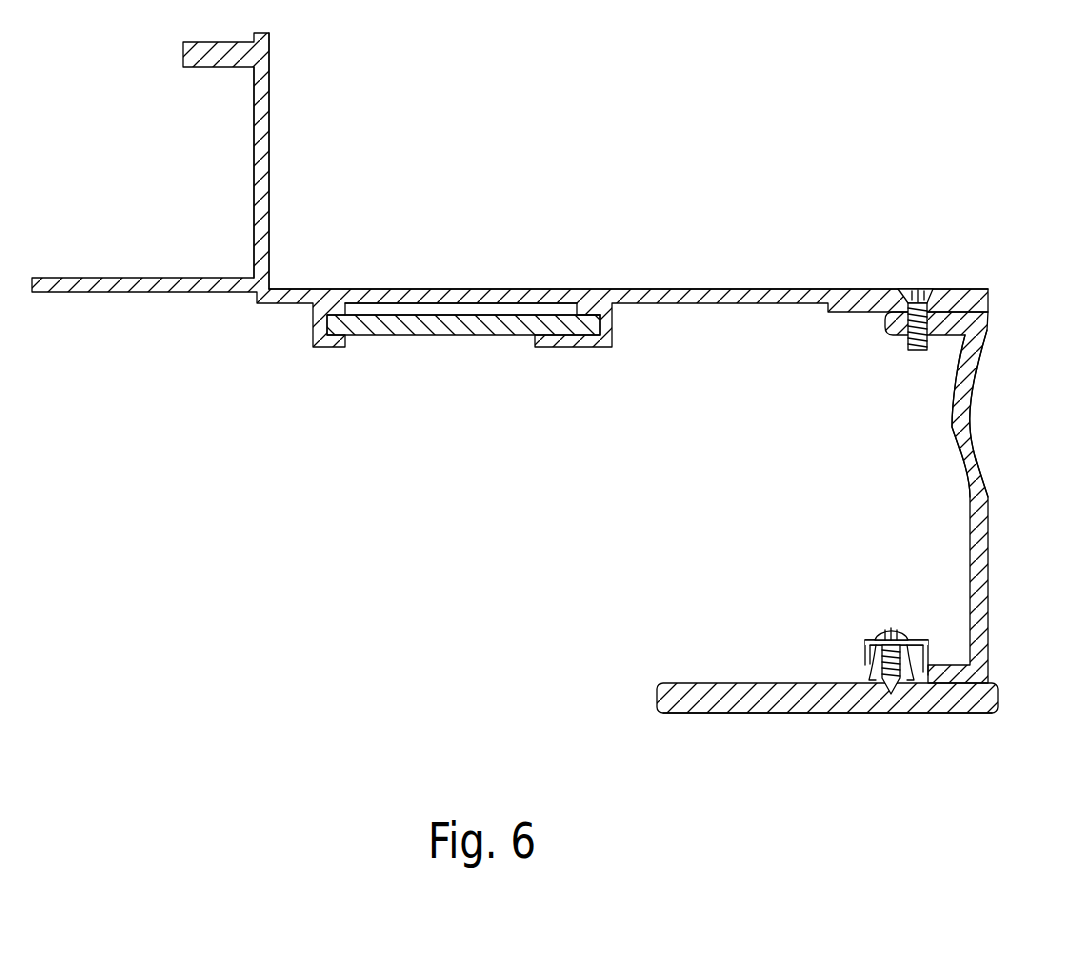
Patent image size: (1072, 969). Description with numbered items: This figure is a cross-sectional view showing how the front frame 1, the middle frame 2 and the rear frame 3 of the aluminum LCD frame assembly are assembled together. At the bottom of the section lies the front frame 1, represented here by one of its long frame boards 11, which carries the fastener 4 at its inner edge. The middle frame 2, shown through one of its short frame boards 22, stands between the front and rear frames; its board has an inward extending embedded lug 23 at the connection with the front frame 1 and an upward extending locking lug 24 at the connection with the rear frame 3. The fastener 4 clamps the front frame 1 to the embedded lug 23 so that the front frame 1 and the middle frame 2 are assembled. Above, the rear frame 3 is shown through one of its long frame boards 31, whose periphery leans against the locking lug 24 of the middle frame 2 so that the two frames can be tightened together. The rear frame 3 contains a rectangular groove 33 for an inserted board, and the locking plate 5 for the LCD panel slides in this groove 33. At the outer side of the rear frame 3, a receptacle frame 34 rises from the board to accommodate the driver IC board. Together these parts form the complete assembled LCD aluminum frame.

The front frame 1 is at (691, 678).
The long frame board 11 is at (772, 708).
The middle frame 2 is at (953, 489).
The short frame board 22 is at (957, 437).
The embedded lug 23 is at (910, 645).
The rear frame 3 is at (791, 281).
The long frame board 31 is at (668, 289).
The rectangular groove 33 is at (510, 313).
The receptacle frame 34 is at (267, 163).
The fastener 4 is at (872, 645).
The locking plate 5 is at (398, 331).
The locking lug 24 is at (890, 336).